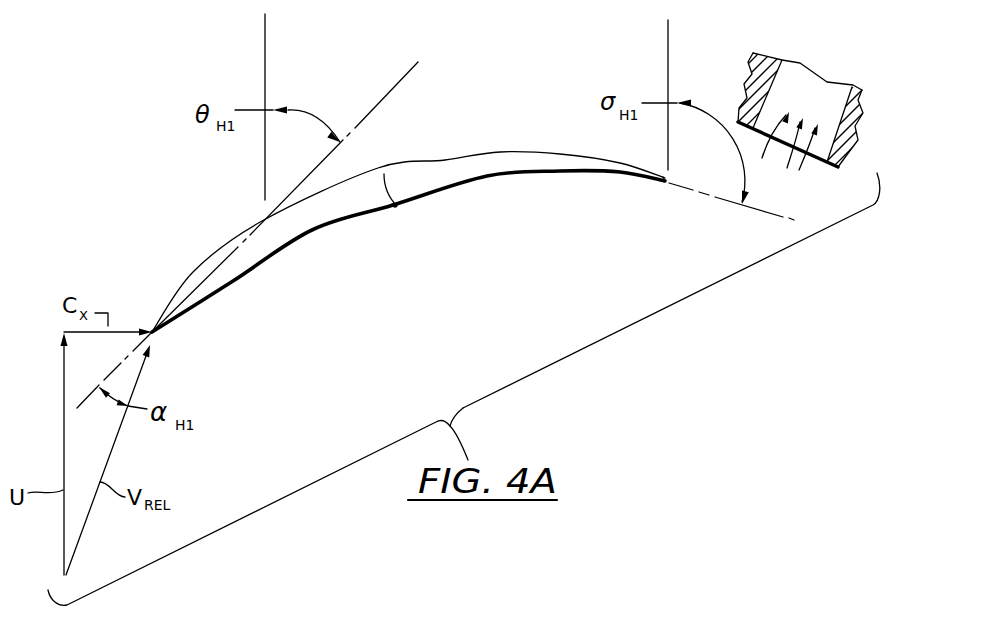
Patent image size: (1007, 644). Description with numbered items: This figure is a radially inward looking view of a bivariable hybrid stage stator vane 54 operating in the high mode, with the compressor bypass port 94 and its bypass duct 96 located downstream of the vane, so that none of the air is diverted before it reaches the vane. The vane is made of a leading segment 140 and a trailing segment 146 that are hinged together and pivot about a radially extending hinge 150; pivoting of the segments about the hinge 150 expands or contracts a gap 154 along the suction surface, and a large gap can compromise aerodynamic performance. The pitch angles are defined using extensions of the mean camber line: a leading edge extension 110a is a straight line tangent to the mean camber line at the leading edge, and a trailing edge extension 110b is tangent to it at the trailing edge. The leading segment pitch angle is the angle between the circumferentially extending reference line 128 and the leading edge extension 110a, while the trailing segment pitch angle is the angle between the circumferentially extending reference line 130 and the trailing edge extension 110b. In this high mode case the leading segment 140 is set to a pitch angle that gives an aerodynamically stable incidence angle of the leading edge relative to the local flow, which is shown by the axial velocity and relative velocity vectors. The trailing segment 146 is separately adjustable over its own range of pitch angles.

The hybrid stage stator vane 54 is at (445, 162).
The compressor bypass port 94 is at (808, 150).
The bypass duct 96 is at (821, 77).
The leading edge extension of the mean camber line 110a is at (203, 282).
The trailing edge extension of the mean camber line 110b is at (681, 188).
The circumferentially extending reference line 128 is at (265, 37).
The circumferentially extending reference line 130 is at (668, 35).
The leading segment 140 is at (311, 226).
The trailing segment 146 is at (489, 171).
The hinge 150 is at (395, 206).
The gap 154 is at (395, 206).